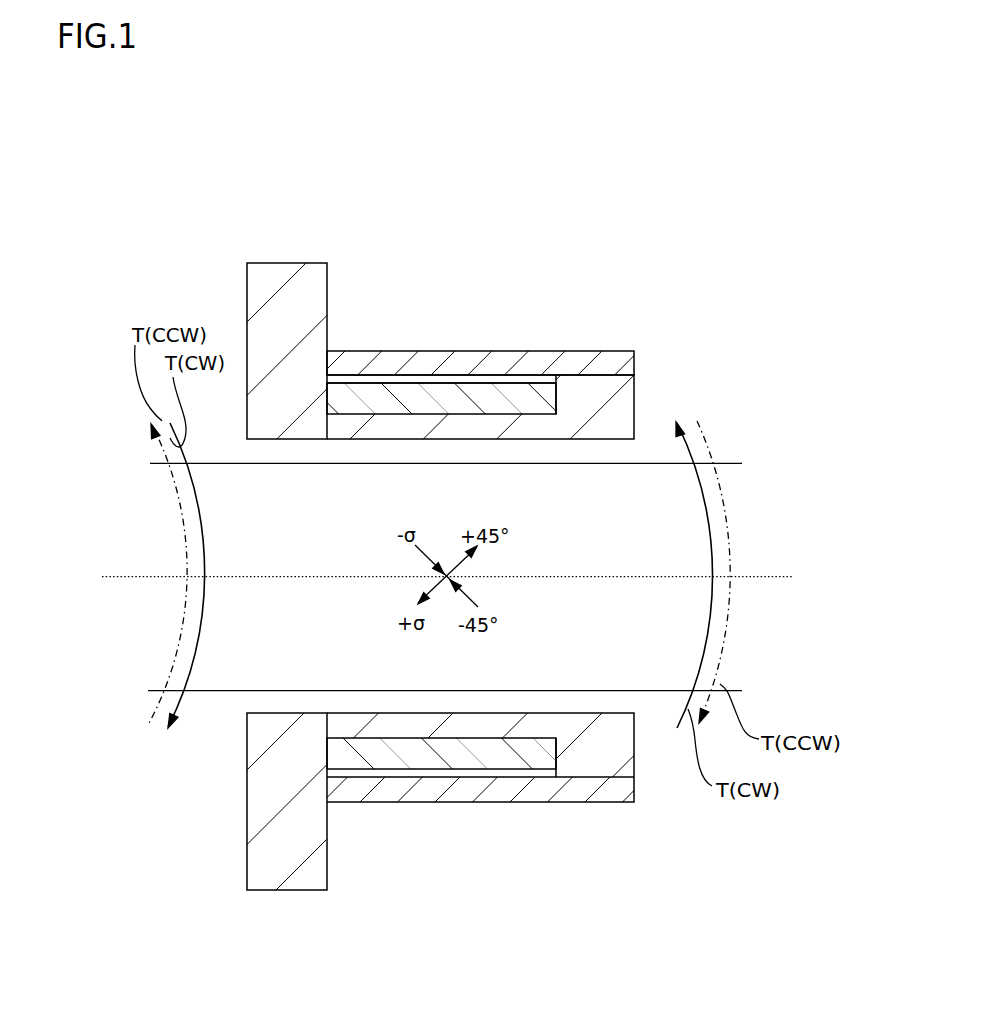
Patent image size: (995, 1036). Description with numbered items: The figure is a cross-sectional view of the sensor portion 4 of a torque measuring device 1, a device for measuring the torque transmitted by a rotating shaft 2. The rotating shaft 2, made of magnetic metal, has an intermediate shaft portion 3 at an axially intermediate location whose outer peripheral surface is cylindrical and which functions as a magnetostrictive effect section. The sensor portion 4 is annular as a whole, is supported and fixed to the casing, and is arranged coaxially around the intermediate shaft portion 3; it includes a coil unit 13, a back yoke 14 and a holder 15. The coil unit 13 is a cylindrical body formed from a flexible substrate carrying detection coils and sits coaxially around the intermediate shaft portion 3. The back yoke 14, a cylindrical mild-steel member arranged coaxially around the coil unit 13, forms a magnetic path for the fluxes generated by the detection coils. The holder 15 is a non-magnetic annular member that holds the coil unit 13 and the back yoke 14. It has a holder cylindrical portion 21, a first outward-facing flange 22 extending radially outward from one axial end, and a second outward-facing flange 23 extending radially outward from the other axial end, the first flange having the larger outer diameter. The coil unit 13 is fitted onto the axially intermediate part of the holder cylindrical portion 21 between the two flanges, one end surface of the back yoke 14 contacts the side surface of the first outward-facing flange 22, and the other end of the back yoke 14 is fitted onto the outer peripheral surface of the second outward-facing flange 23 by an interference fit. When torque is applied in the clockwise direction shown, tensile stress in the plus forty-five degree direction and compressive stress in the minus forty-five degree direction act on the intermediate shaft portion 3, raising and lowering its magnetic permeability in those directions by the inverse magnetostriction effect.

The torque measuring device 1 is at (543, 245).
The rotating shaft 2 is at (710, 455).
The intermediate shaft portion 3 is at (227, 663).
The sensor portion 4 is at (565, 356).
The coil unit 13 is at (405, 407).
The back yoke 14 is at (468, 360).
The holder 15 is at (263, 294).
The holder cylindrical portion 21 is at (443, 760).
The first outward-facing flange 22 is at (283, 866).
The second outward-facing flange 23 is at (598, 755).